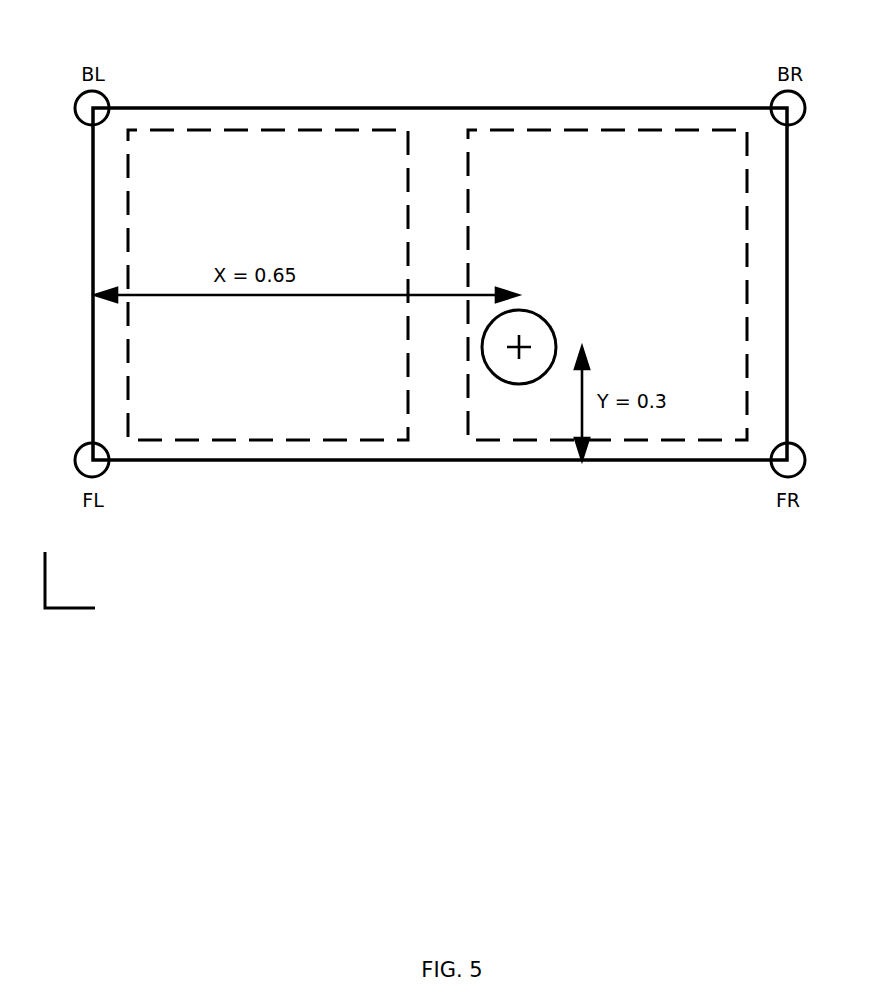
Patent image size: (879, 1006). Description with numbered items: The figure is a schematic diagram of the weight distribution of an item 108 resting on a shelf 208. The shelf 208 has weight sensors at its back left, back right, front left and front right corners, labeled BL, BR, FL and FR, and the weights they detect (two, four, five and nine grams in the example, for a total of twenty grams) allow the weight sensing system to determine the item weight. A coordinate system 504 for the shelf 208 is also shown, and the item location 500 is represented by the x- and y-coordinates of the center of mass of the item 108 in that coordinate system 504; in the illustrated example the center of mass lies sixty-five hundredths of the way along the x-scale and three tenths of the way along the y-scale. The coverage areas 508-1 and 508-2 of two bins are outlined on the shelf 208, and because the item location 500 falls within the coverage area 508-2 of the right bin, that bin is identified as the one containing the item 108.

The shelf 208 is at (463, 108).
The coverage area 508-1 is at (205, 130).
The coverage area 508-2 is at (580, 130).
The item 108 is at (548, 318).
The item location 500 is at (517, 361).
The coordinate system 504 is at (45, 612).